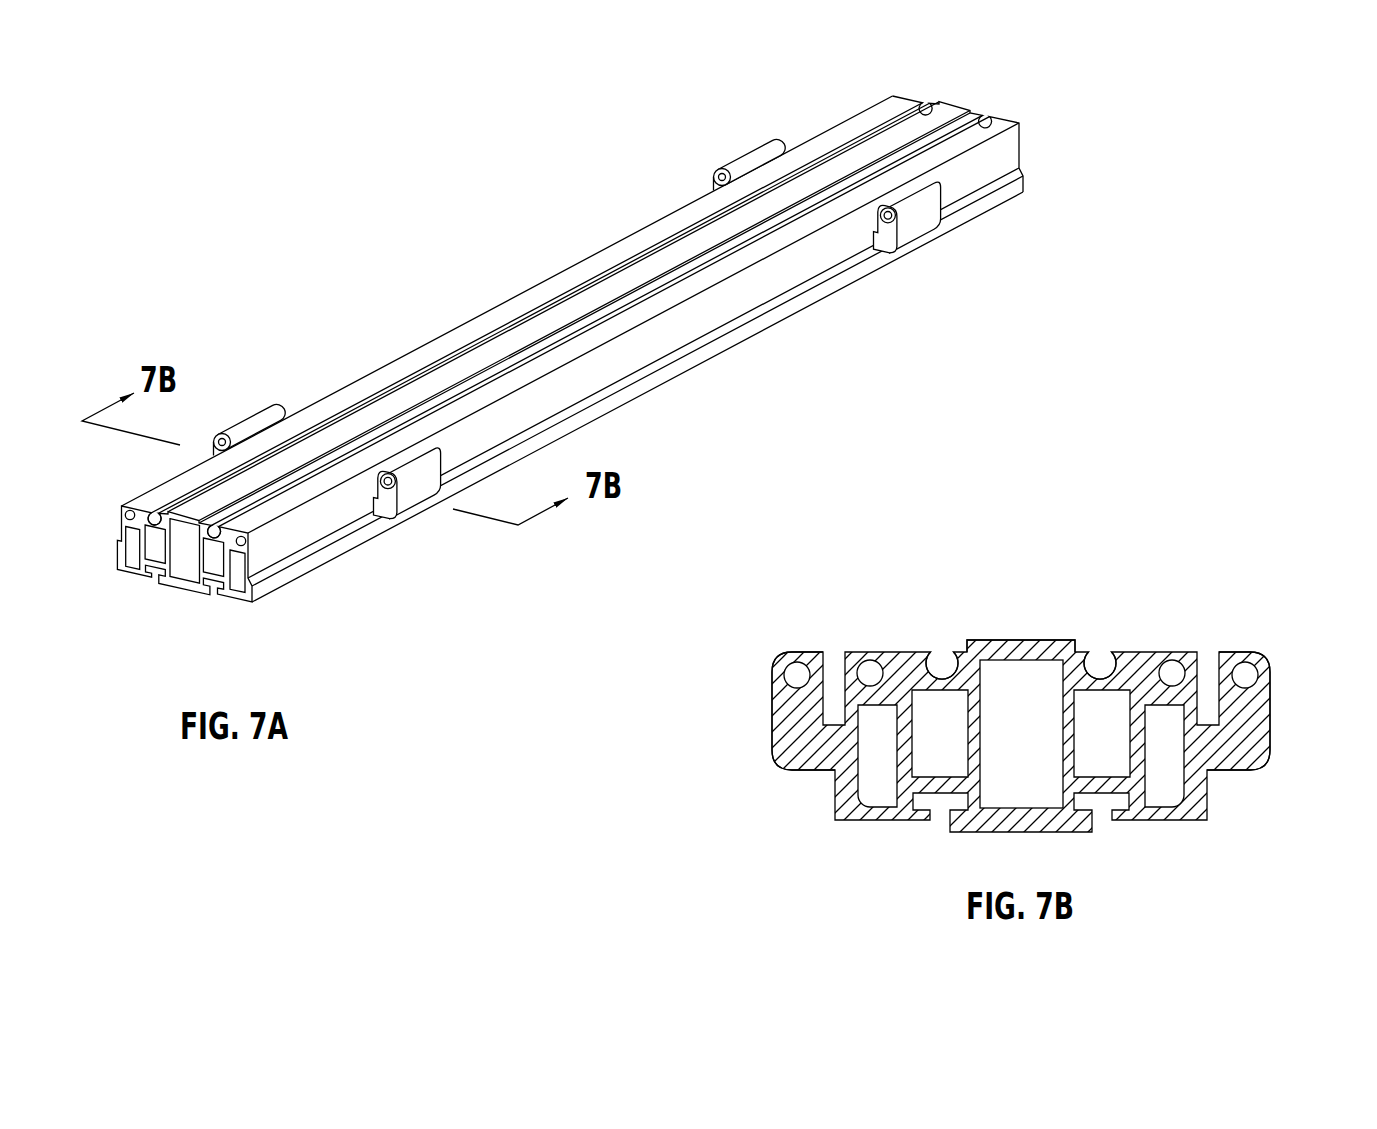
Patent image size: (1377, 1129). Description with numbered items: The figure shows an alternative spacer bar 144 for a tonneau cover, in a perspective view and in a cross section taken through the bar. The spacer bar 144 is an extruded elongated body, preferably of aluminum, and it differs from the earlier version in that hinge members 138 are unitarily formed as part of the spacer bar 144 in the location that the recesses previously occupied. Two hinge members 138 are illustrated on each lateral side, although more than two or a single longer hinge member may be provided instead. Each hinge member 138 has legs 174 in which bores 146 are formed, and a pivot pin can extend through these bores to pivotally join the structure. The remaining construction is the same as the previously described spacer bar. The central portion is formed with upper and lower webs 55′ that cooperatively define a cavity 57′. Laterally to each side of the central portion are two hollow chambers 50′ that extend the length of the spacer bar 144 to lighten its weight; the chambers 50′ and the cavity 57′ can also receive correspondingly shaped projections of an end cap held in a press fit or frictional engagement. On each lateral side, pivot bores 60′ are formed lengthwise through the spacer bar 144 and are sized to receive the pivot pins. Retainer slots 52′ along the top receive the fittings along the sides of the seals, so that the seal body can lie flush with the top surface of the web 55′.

In FIG. 7A, the spacer bar 144 is at (505, 247).
In FIG. 7B, the spacer bar 144 is at (963, 585).
In FIG. 7A, the hinge member 138 is at (574, 324).
In FIG. 7B, the hinge member 138 is at (1021, 726).
In FIG. 7A, the leg 174 is at (567, 332).
In FIG. 7B, the leg 174 is at (1021, 709).
In FIG. 7A, the bore 146 is at (722, 176).
In FIG. 7B, the bore 146 is at (797, 675).
In FIG. 7A, the retainer slot 52′ is at (191, 527).
In FIG. 7B, the retainer slot 52′ is at (940, 665).
In FIG. 7B, the web 55′ is at (1021, 640).
In FIG. 7A, the cavity 57′ is at (186, 556).
In FIG. 7B, the cavity 57′ is at (1042, 736).
In FIG. 7A, the pivot bore 60′ is at (125, 516).
In FIG. 7B, the pivot bore 60′ is at (864, 668).
In FIG. 7A, the hollow chamber 50′ is at (150, 555).
In FIG. 7B, the hollow chamber 50′ is at (938, 751).